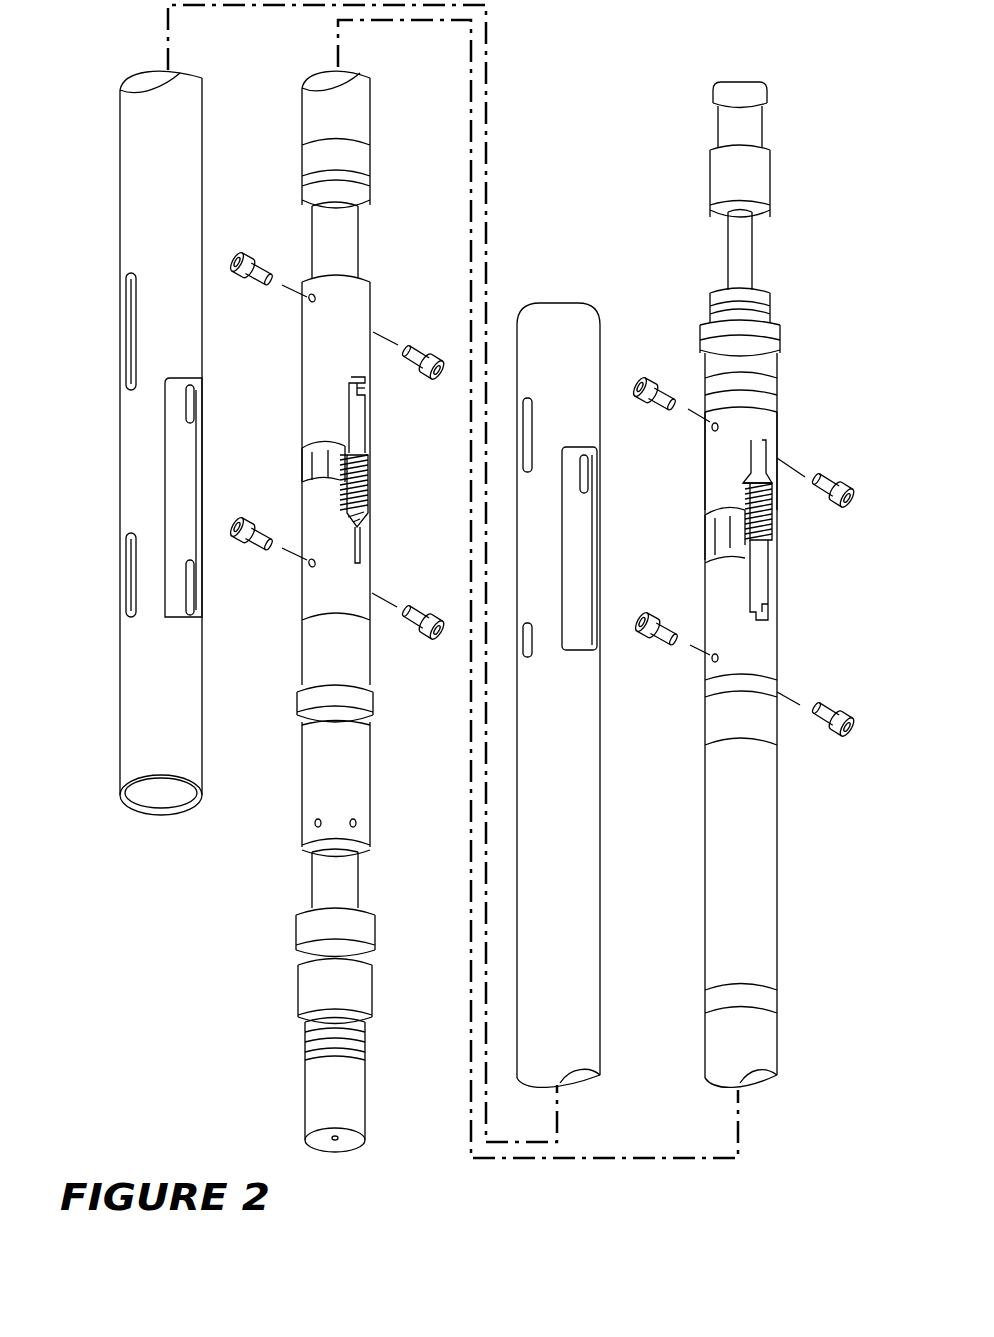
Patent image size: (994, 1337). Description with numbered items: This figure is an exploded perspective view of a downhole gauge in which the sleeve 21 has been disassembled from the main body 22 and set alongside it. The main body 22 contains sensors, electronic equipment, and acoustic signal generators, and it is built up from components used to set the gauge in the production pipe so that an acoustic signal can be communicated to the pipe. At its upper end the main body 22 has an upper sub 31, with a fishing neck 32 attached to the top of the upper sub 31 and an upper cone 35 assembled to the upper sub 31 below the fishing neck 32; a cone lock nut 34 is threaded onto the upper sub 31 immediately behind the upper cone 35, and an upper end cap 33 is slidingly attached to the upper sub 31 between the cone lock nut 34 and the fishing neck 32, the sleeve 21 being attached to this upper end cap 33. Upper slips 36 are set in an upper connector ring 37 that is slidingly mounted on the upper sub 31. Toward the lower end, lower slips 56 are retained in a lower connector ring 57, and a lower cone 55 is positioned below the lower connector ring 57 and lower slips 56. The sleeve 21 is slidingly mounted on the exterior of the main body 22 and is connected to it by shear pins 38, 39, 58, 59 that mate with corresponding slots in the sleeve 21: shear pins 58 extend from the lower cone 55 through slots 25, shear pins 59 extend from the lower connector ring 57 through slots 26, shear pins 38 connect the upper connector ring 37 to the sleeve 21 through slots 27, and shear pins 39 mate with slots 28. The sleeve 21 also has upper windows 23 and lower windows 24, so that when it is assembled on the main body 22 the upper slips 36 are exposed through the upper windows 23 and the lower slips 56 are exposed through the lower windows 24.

The sleeve 21 is at (120, 722).
The main body 22 is at (310, 785).
The upper windows 23 is at (597, 530).
The lower windows 24 is at (165, 485).
The slots 25 is at (128, 577).
The slots 26 is at (127, 330).
The slots 27 is at (528, 655).
The slots 28 is at (530, 408).
The upper sub 31 is at (738, 260).
The fishing neck 32 is at (757, 173).
The upper end cap 33 is at (778, 335).
The cone lock nut 34 is at (770, 405).
The upper cone 35 is at (772, 435).
The upper slips 36 is at (772, 520).
The upper connector ring 37 is at (718, 598).
The shear pins 38 is at (845, 740).
The shear pins 39 is at (845, 512).
The lower cone 55 is at (372, 573).
The lower slips 56 is at (372, 488).
The lower connector ring 57 is at (303, 373).
The shear pins 58 is at (241, 541).
The shear pins 59 is at (241, 276).